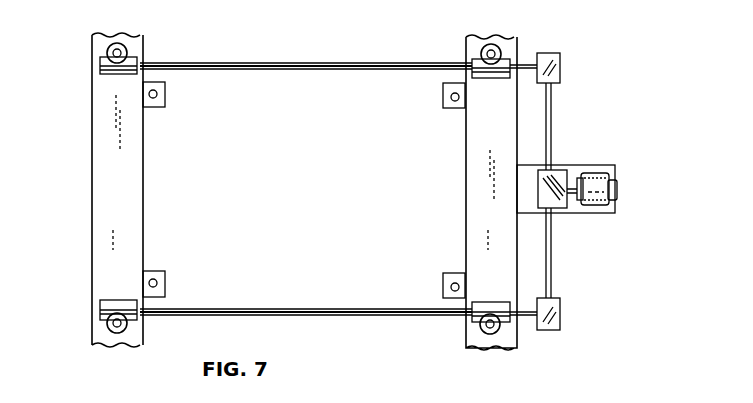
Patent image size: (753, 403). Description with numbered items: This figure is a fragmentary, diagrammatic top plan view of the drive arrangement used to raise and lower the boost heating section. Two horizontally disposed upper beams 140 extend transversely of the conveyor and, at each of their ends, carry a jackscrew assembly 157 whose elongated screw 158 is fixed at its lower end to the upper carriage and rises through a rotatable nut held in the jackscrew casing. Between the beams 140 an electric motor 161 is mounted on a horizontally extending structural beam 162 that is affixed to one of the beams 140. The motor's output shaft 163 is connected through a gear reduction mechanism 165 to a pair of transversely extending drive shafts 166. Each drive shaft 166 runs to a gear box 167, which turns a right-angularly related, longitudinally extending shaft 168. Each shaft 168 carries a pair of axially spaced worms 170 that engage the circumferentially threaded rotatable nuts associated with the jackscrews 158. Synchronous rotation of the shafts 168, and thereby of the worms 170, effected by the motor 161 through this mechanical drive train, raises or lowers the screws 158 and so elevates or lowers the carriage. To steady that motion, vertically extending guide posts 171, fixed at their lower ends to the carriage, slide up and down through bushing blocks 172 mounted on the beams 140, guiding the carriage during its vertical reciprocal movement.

The upper beam 140 is at (102, 147).
The jackscrew assembly 157 is at (133, 35).
The screw 158 is at (117, 53).
The electric motor 161 is at (603, 192).
The structural beam 162 is at (605, 168).
The output shaft 163 is at (572, 196).
The gear reduction mechanism 165 is at (557, 180).
The drive shaft 166 is at (552, 103).
The gear box 167 is at (553, 67).
The longitudinally extending shaft 168 is at (285, 68).
The worm 170 is at (103, 73).
The guide post 171 is at (157, 92).
The bushing block 172 is at (143, 105).